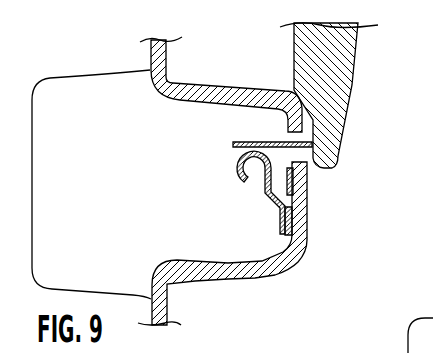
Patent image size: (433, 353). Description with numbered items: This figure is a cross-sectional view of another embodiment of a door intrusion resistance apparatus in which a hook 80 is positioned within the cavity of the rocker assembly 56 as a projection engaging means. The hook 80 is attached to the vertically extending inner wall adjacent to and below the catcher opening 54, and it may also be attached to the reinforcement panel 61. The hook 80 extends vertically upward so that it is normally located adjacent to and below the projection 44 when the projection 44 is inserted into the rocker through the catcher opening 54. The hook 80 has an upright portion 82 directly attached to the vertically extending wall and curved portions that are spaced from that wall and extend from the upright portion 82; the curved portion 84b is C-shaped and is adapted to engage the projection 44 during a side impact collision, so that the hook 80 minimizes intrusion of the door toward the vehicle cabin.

The projection 44 is at (254, 142).
The catcher opening 54 is at (298, 152).
The rocker assembly 56 is at (165, 194).
The reinforcement panel 61 is at (293, 181).
The hook 80 is at (300, 220).
The upright portion 82 is at (292, 206).
The curved portion 84b is at (236, 165).